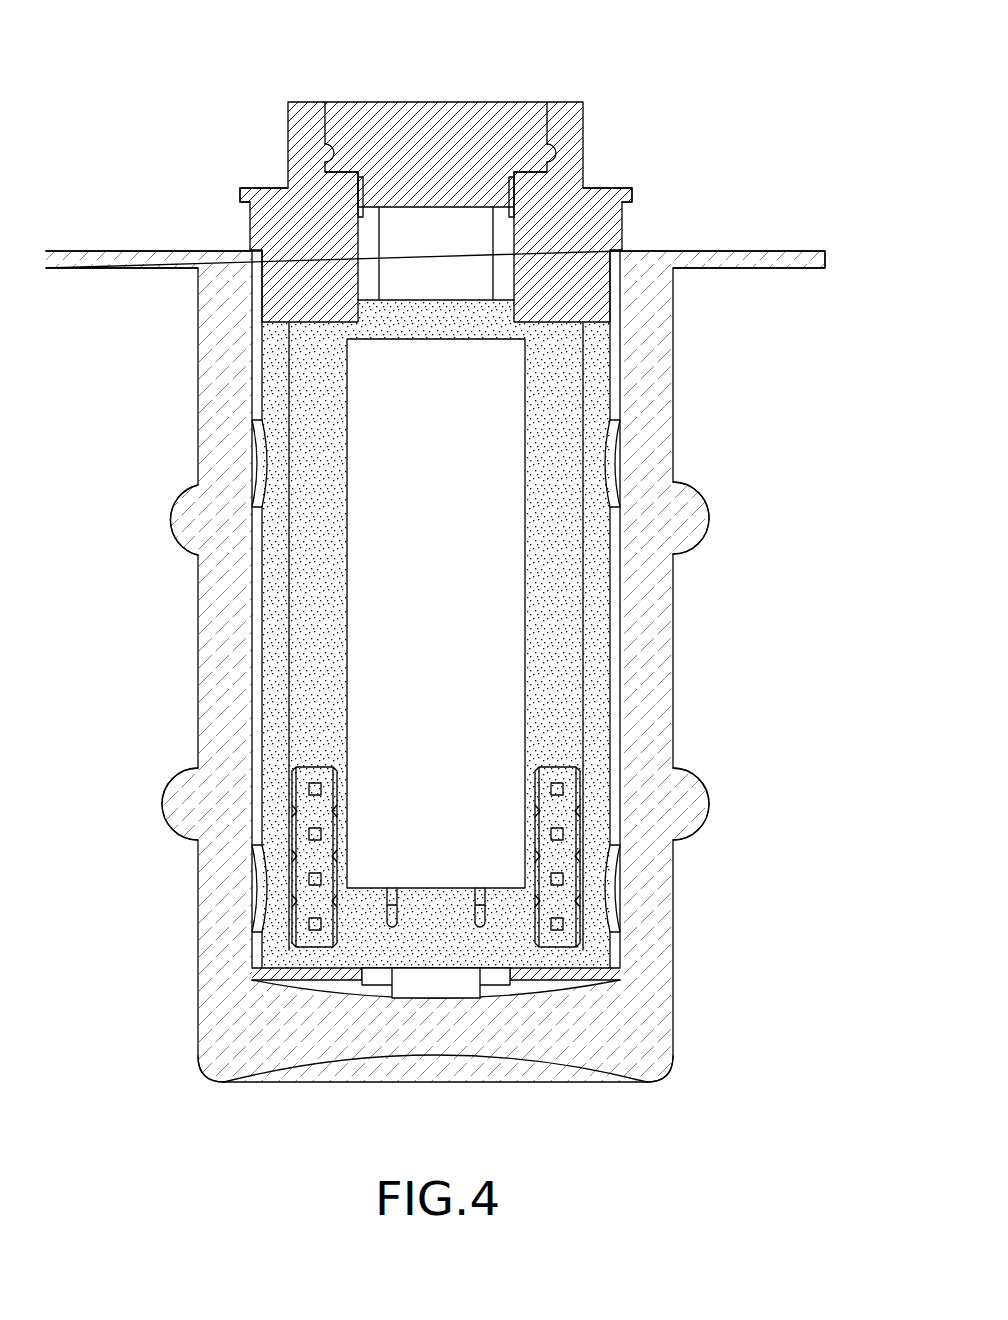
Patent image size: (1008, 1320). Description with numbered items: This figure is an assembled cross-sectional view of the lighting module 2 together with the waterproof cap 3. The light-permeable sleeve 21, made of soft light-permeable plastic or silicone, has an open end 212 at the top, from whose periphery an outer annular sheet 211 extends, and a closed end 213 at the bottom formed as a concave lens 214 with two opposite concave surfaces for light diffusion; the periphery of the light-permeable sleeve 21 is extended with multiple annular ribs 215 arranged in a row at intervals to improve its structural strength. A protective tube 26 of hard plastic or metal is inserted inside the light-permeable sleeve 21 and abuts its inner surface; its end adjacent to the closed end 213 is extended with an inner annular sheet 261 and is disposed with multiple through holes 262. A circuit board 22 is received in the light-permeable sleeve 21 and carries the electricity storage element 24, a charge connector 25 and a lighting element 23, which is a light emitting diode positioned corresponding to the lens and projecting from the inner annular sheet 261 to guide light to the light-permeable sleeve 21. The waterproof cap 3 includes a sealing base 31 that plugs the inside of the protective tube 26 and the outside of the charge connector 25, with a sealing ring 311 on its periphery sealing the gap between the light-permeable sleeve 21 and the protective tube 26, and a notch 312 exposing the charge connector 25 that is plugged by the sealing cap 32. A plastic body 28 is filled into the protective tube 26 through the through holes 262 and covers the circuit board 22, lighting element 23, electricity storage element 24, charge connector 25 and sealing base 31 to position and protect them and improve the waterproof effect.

The lighting module 2 is at (463, 671).
The light-permeable sleeve 21 is at (647, 687).
The outer annular sheet 211 is at (773, 253).
The open end 212 is at (617, 254).
The closed end 213 is at (355, 1040).
The concave lens 214 is at (467, 1054).
The annular ribs 215 is at (697, 805).
The circuit board 22 is at (560, 668).
The lighting element 23 is at (437, 988).
The electricity storage element 24 is at (367, 575).
The charge connector 25 is at (443, 212).
The protective tube 26 is at (513, 692).
The inner annular sheet 261 is at (575, 978).
The through holes 262 is at (608, 450).
The plastic body 28 is at (277, 627).
The waterproof cap 3 is at (487, 169).
The sealing base 31 is at (487, 212).
The sealing ring 311 is at (625, 213).
The notch 312 is at (327, 130).
The sealing cap 32 is at (488, 112).